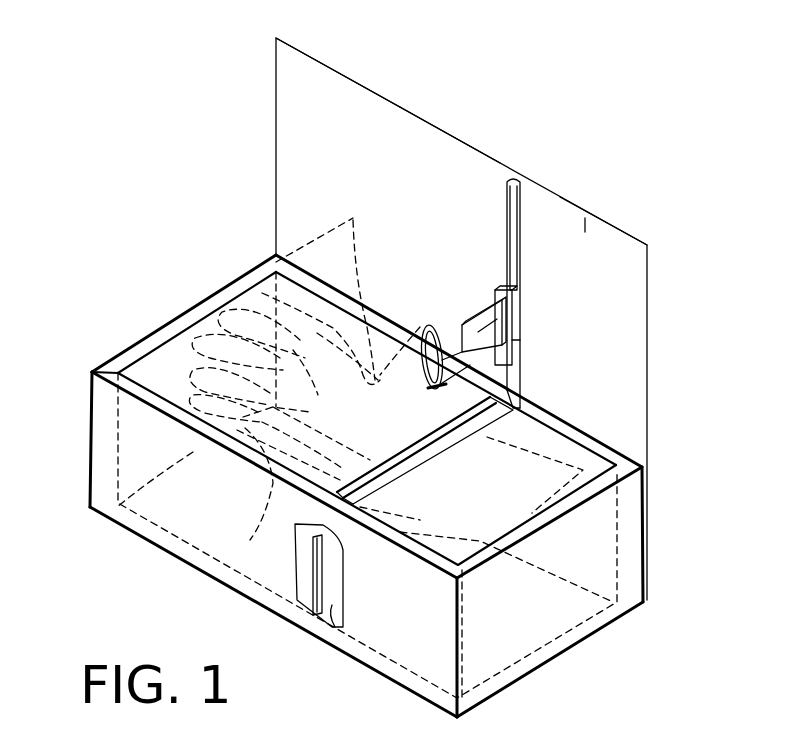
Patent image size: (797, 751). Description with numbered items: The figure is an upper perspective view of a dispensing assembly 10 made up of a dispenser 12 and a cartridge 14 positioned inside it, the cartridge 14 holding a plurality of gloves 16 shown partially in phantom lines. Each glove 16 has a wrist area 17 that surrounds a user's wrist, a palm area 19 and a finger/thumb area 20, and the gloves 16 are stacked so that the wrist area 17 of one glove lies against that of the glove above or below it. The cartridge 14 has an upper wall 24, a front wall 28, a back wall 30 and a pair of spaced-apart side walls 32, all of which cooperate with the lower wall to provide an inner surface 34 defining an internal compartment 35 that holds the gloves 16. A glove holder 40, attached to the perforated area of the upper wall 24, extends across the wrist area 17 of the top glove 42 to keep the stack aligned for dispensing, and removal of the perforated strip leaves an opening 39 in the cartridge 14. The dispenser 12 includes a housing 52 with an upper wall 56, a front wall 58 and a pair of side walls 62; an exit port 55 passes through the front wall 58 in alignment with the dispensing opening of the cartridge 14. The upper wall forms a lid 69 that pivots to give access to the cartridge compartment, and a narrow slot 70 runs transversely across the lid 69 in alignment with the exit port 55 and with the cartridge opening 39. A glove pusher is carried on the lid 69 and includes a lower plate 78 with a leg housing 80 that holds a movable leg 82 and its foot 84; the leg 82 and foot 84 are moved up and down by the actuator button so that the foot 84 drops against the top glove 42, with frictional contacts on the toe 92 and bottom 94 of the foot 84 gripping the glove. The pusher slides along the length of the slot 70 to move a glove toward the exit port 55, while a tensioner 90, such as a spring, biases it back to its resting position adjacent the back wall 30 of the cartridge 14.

The dispensing assembly 10 is at (108, 193).
The dispenser 12 is at (650, 330).
The cartridge 14 is at (183, 342).
The gloves 16 is at (393, 456).
The wrist area 17 is at (518, 462).
The palm area 19 is at (250, 536).
The finger/thumb area 20 is at (327, 286).
The upper wall 24 is at (152, 364).
The front wall 28 is at (103, 513).
The back wall 30 is at (622, 457).
The side walls 32 is at (633, 545).
The inner surface 34 is at (623, 252).
The internal compartment 35 is at (590, 440).
The opening 39 is at (420, 453).
The glove holder 40 is at (522, 318).
The top glove 42 is at (230, 483).
The housing 52 is at (347, 78).
The exit port 55 is at (337, 610).
The upper wall 56 is at (588, 222).
The front wall 58 is at (380, 675).
The side walls 62 is at (507, 688).
The lid 69 is at (450, 134).
The slot 70 is at (515, 227).
The lower plate 78 is at (518, 298).
The leg housing 80 is at (490, 300).
The movable leg 82 is at (430, 389).
The foot 84 is at (433, 330).
The tensioner 90 is at (517, 378).
The toe 92 is at (420, 327).
The bottom 94 is at (410, 365).